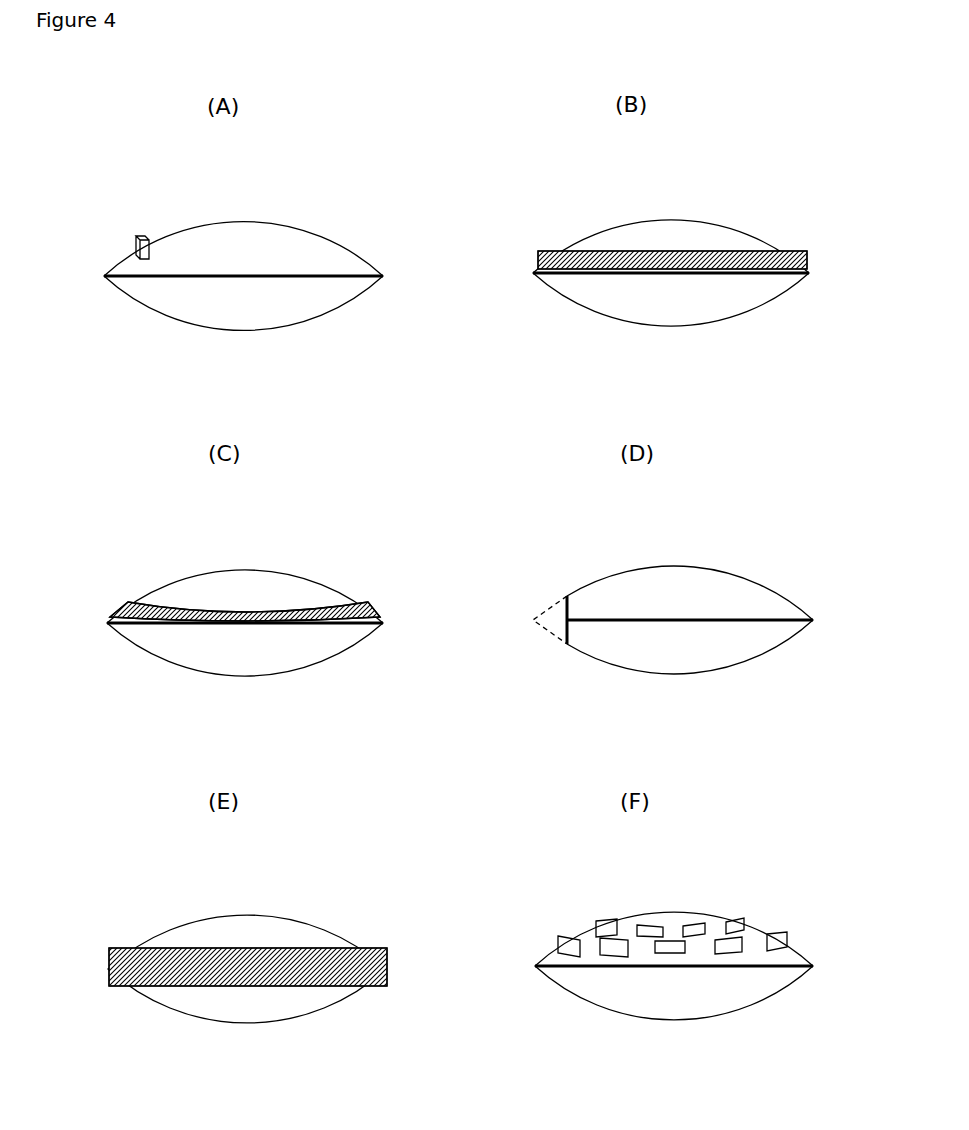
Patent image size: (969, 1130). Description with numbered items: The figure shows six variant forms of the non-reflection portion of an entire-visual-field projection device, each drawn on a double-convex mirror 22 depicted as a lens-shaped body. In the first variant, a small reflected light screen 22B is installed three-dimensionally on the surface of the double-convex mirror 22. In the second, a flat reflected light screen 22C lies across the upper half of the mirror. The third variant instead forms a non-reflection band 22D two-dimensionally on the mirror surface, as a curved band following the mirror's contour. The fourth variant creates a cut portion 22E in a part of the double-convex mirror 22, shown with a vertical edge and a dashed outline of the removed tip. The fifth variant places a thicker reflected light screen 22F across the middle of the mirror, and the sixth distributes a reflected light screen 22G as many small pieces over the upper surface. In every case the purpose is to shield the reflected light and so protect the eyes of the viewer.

The double-convex mirror 22 is at (298, 242).
The reflected light screen 22B is at (147, 240).
The reflected light screen 22C is at (573, 257).
The non-reflection band 22D is at (165, 602).
The cut portion 22E is at (550, 608).
The reflected light screen 22F is at (175, 962).
The reflected light screen 22G is at (605, 927).